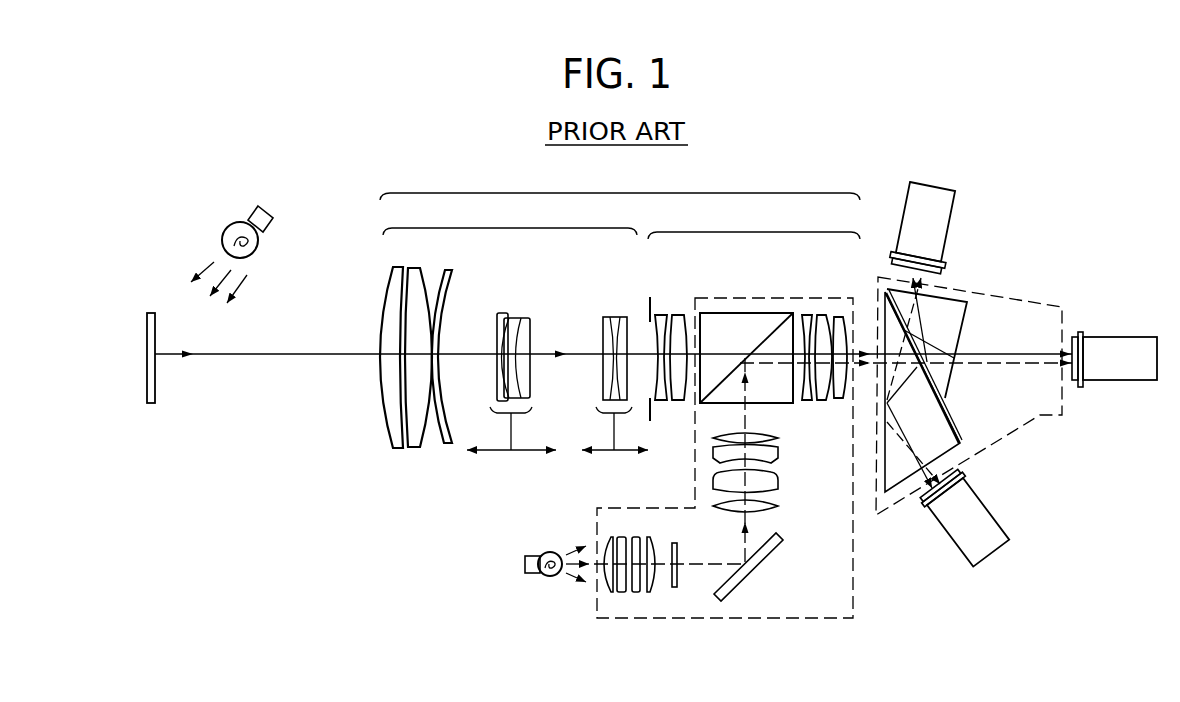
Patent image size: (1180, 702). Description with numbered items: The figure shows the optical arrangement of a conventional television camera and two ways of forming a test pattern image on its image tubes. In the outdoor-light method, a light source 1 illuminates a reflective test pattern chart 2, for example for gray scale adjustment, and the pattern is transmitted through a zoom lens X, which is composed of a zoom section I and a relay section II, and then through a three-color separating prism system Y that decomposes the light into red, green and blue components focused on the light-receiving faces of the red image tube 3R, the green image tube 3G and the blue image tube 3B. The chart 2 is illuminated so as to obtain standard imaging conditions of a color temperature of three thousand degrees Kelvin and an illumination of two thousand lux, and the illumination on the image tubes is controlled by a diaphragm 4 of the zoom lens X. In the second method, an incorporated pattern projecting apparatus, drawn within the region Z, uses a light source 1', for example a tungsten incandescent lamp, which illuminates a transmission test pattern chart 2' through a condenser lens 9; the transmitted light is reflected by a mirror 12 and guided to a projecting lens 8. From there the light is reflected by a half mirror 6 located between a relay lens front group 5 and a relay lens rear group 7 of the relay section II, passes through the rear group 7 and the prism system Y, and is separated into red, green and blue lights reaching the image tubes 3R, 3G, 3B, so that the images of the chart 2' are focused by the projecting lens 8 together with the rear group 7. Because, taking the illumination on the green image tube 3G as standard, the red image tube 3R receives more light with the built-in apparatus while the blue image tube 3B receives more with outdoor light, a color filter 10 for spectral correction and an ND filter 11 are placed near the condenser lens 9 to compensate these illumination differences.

The light source 1 is at (234, 232).
The reflective test pattern chart 2 is at (172, 358).
The diaphragm 4 is at (648, 302).
The relay lens front group 5 is at (690, 271).
The half mirror 6 is at (795, 271).
The relay lens rear group 7 is at (858, 271).
The projecting lens 8 is at (785, 430).
The condenser lens 9 is at (607, 592).
The color filter 10 is at (620, 592).
The ND filter 11 is at (636, 592).
The mirror 12 is at (769, 334).
The light source 1' is at (555, 543).
The transmission test pattern chart 2' is at (688, 598).
The red image tube 3R is at (944, 226).
The green image tube 3G is at (1118, 345).
The blue image tube 3B is at (975, 509).
The zoom lens X is at (620, 183).
The three-color separating prism system Y is at (1031, 305).
The auxiliary projection system Z is at (855, 580).
The zoom section I is at (510, 217).
The relay section II is at (754, 219).